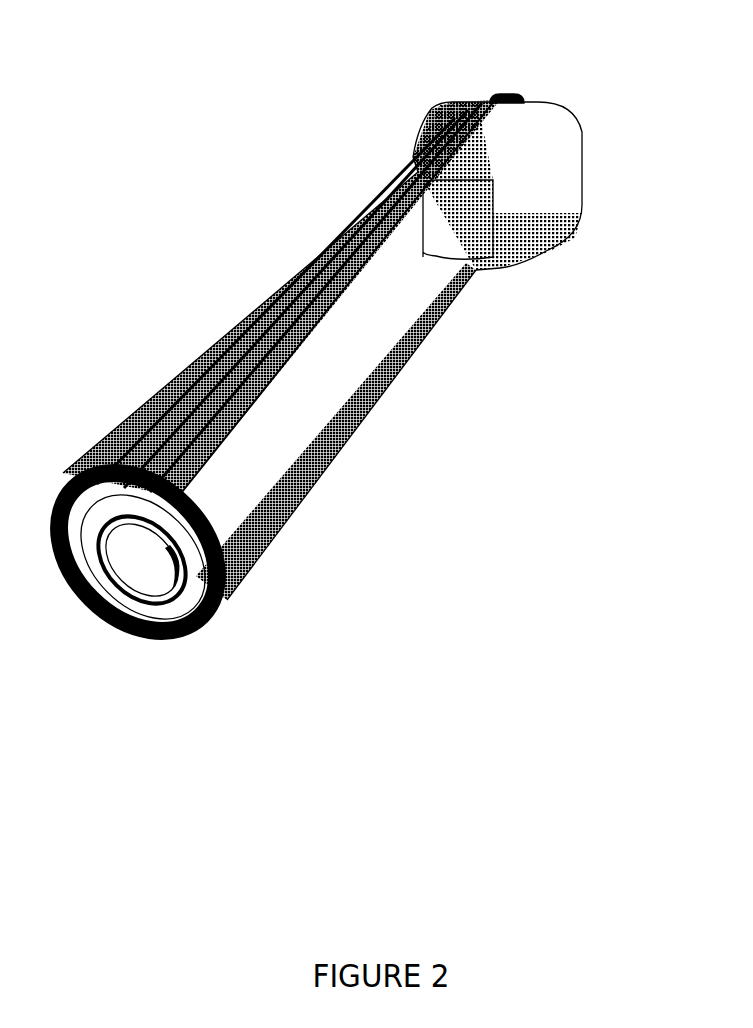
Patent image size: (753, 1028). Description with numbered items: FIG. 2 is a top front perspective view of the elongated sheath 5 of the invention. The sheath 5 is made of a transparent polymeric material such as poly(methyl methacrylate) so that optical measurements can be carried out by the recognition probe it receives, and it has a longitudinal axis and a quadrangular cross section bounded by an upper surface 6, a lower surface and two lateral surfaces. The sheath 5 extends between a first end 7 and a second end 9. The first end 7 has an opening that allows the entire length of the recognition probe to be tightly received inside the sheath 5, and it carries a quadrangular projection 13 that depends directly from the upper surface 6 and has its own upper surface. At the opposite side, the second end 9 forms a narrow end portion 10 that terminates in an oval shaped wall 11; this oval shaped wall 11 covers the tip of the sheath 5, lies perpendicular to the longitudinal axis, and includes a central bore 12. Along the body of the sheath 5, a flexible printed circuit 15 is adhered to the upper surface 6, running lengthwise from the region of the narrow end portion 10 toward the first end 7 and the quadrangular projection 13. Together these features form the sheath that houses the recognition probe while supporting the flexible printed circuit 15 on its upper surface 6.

The elongated sheath 5 is at (407, 350).
The upper surface 6 is at (387, 260).
The first end 7 is at (557, 167).
The second end 9 is at (70, 598).
The narrow end portion 10 is at (265, 518).
The oval shaped wall 11 is at (187, 528).
The central bore 12 is at (128, 555).
The quadrangular projection 13 is at (503, 97).
The flexible printed circuit 15 is at (180, 423).